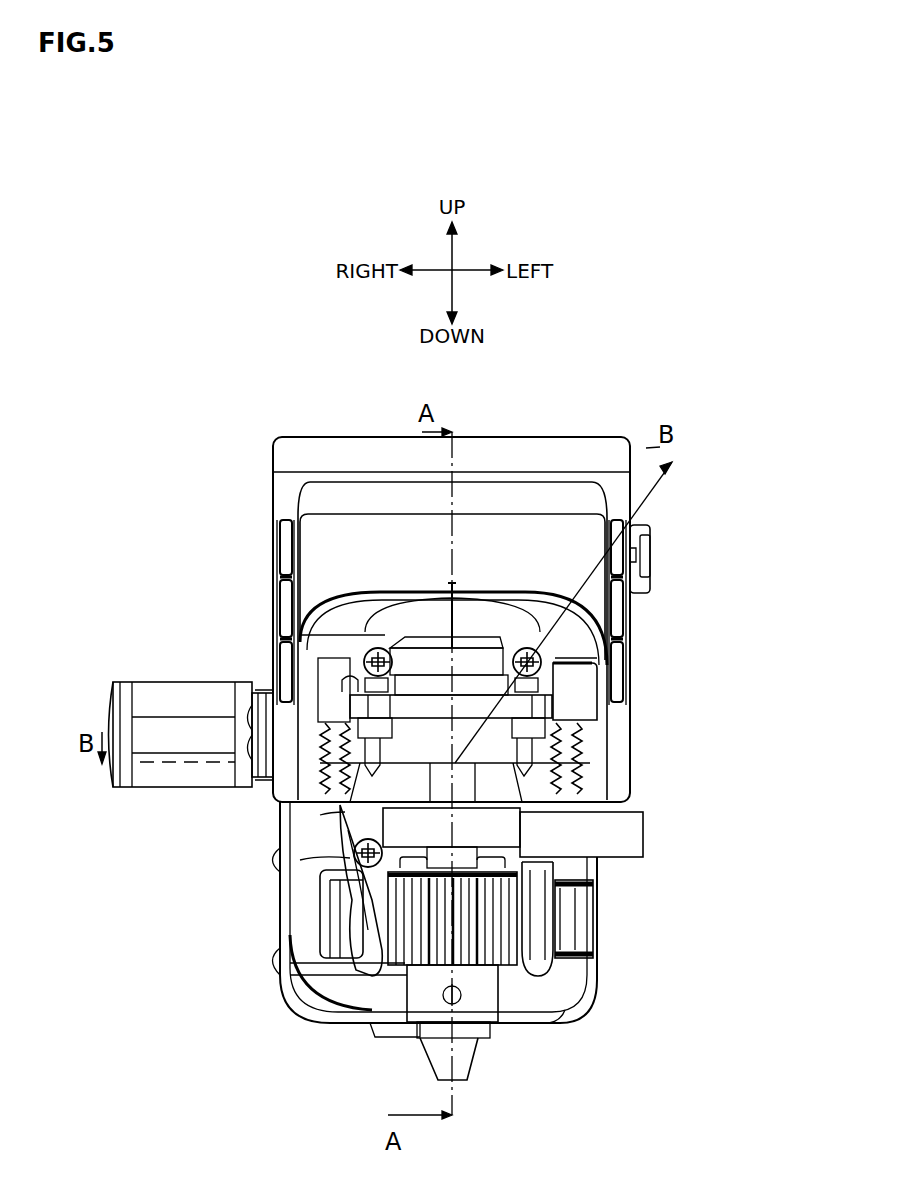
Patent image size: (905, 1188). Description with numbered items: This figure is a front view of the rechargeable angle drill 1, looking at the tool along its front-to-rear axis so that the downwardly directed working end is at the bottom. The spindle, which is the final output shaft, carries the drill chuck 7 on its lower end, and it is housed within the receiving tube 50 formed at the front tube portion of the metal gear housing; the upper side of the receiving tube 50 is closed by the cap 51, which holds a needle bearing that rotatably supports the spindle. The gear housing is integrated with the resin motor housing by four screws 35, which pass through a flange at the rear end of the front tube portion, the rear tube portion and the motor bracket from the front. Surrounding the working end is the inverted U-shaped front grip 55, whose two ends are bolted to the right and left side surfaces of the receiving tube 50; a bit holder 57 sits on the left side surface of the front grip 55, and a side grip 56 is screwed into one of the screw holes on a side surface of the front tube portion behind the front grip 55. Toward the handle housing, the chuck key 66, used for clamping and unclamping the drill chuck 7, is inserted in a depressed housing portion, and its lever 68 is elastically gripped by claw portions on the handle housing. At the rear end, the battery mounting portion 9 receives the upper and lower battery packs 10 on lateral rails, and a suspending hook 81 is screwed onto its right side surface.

The rechargeable angle drill 1 is at (583, 366).
The drill chuck 7 is at (478, 1012).
The battery mounting portion 9 is at (537, 963).
The battery pack 10 is at (557, 598).
The screw 35 is at (368, 650).
The receiving tube 50 is at (300, 797).
The cap 51 is at (405, 626).
The front grip 55 is at (322, 443).
The side grip 56 is at (633, 833).
The bit holder 57 is at (650, 540).
The chuck key 66 is at (345, 830).
The lever 68 is at (322, 898).
The hook 81 is at (162, 688).